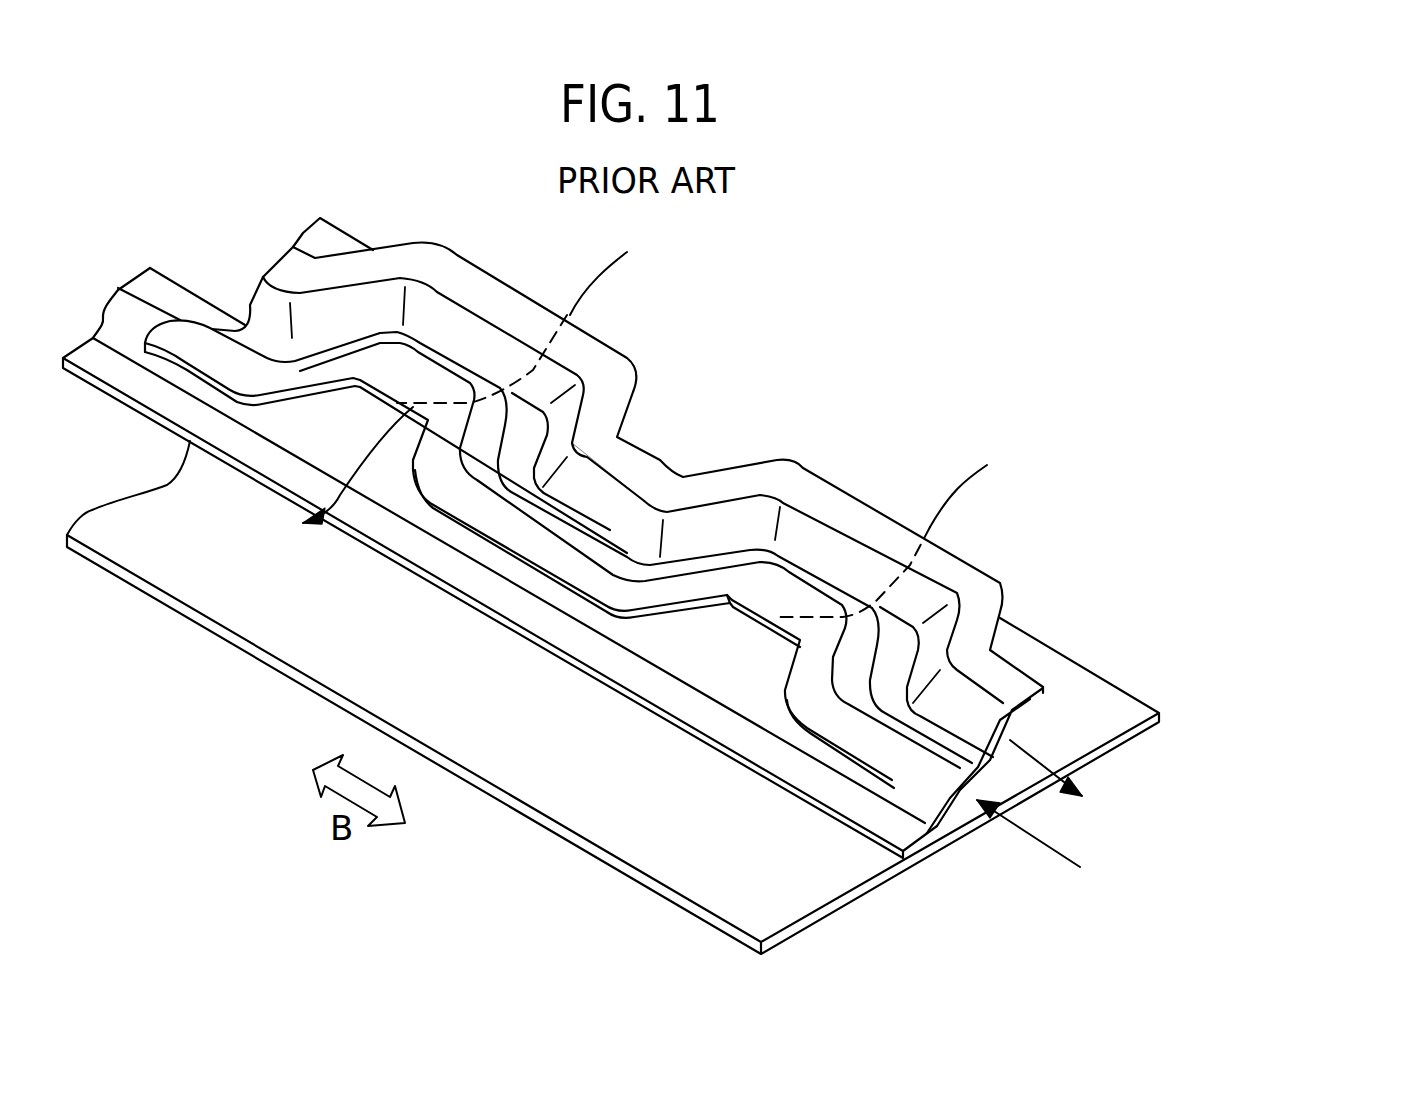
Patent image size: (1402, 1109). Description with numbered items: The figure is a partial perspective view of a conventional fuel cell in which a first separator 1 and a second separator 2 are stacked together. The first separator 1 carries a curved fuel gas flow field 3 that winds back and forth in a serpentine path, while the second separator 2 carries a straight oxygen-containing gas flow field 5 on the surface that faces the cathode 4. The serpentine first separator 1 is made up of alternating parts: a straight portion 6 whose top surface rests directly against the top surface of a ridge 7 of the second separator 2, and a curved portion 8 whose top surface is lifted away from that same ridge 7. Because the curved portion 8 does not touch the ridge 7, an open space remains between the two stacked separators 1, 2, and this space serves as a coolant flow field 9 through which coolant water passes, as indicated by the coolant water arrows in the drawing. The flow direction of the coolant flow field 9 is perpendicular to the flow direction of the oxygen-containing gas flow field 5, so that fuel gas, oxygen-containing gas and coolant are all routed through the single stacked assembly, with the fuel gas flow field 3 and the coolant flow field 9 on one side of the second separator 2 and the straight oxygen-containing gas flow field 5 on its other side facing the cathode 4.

The first separator 1 is at (185, 340).
The second separator 2 is at (112, 362).
The fuel gas flow field 3 is at (527, 418).
The cathode 4 is at (698, 845).
The oxygen-containing gas flow field 5 is at (967, 812).
The straight portion 6 is at (677, 480).
The ridge 7 is at (137, 287).
The curved portion 8 is at (963, 557).
The coolant flow field 9 is at (668, 738).